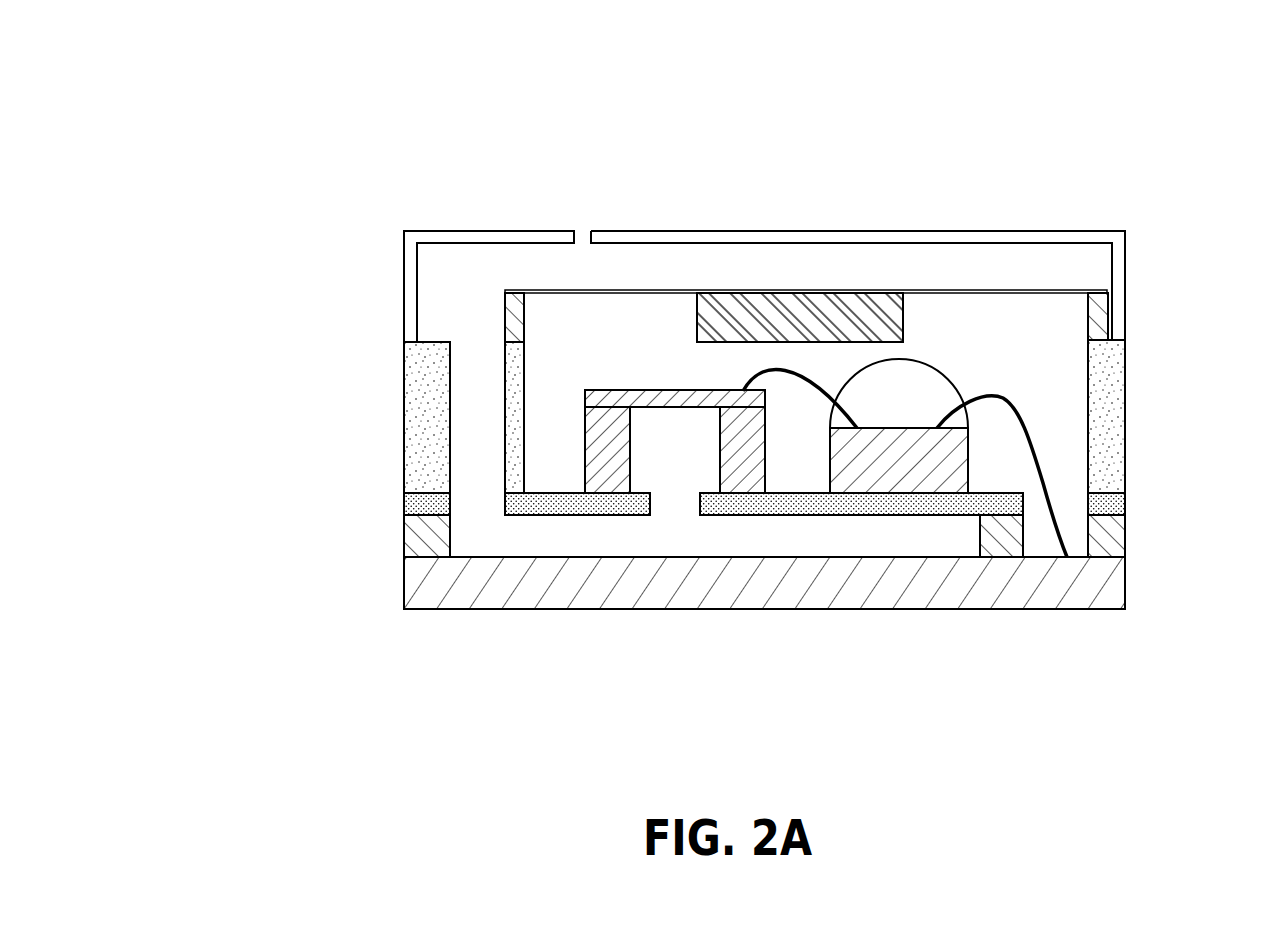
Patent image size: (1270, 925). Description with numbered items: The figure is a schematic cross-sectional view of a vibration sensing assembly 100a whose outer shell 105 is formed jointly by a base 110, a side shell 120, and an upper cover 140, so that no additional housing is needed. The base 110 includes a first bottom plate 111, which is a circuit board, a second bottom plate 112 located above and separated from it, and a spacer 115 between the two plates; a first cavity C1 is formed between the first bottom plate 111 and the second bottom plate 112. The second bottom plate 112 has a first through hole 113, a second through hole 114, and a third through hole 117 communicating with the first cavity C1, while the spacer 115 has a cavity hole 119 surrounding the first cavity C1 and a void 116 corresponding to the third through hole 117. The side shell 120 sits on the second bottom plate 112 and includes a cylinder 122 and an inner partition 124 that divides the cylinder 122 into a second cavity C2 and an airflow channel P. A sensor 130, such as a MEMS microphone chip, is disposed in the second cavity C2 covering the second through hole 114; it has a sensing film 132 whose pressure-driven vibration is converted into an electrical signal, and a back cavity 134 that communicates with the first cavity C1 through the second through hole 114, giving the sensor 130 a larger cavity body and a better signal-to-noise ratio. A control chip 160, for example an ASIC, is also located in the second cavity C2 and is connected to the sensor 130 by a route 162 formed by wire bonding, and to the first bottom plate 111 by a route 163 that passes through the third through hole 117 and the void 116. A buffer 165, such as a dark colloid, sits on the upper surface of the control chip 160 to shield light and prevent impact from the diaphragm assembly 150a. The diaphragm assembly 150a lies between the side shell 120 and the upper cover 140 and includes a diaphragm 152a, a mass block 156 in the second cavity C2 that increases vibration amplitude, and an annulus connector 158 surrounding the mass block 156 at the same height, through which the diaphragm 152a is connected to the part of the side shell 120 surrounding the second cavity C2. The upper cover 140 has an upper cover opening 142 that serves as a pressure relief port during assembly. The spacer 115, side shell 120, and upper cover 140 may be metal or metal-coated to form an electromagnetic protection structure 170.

The vibration sensing assembly 100a is at (349, 184).
The outer shell 105 is at (128, 32).
The electromagnetic protection structure 170 is at (128, 182).
The base 110 is at (1218, 488).
The first bottom plate 111 is at (1122, 580).
The second bottom plate 112 is at (1122, 503).
The first through hole 113 is at (455, 505).
The second through hole 114 is at (651, 508).
The spacer 115 is at (1122, 538).
The void 116 is at (1029, 509).
The third through hole 117 is at (1054, 560).
The cavity hole 119 is at (455, 525).
The side shell 120 is at (323, 293).
The cylinder 122 is at (417, 358).
The inner partition 124 is at (523, 400).
The sensor 130 is at (603, 415).
The sensing film 132 is at (675, 397).
The back cavity 134 is at (683, 446).
The upper cover 140 is at (1117, 253).
The upper cover opening 142 is at (580, 230).
The diaphragm assembly 150a is at (998, 158).
The diaphragm 152a is at (926, 290).
The mass block 156 is at (835, 335).
The annulus connector 158 is at (1087, 316).
The control chip 160 is at (907, 475).
The route 162 is at (783, 372).
The route 163 is at (1027, 422).
The buffer 165 is at (873, 410).
The airflow channel P is at (477, 452).
The first cavity C1 is at (754, 546).
The second cavity C2 is at (1056, 362).